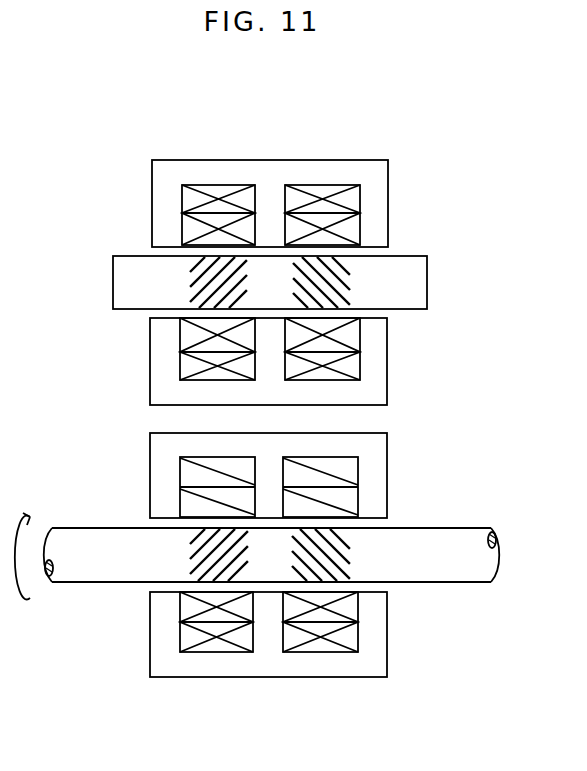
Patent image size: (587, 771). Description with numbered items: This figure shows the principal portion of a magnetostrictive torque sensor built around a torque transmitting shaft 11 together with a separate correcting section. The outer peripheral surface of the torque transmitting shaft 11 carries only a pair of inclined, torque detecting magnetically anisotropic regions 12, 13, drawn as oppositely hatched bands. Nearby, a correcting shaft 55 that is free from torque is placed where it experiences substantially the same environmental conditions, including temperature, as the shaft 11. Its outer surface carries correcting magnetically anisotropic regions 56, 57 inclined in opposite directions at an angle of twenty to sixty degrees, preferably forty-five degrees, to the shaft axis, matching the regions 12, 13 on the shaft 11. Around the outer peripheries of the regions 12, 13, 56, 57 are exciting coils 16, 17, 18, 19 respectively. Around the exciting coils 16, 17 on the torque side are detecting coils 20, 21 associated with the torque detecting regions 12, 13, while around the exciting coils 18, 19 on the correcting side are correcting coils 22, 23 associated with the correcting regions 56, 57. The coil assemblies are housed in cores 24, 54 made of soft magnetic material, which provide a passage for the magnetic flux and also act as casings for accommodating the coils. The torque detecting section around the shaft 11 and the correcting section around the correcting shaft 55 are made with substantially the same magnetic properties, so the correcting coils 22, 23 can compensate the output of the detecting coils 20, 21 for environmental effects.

The torque transmitting shaft 11 is at (453, 540).
The torque detecting magnetically anisotropic region 12 is at (192, 566).
The torque detecting magnetically anisotropic region 13 is at (346, 558).
The exciting coil 16 is at (197, 607).
The exciting coil 17 is at (302, 607).
The exciting coil 18 is at (198, 225).
The exciting coil 19 is at (303, 225).
The detecting coil 20 is at (242, 632).
The detecting coil 21 is at (347, 632).
The correcting coil 22 is at (237, 197).
The correcting coil 23 is at (345, 197).
The core 24 is at (380, 640).
The core 54 is at (153, 210).
The correcting shaft 55 is at (413, 255).
The correcting magnetically anisotropic region 56 is at (190, 290).
The correcting magnetically anisotropic region 57 is at (350, 288).